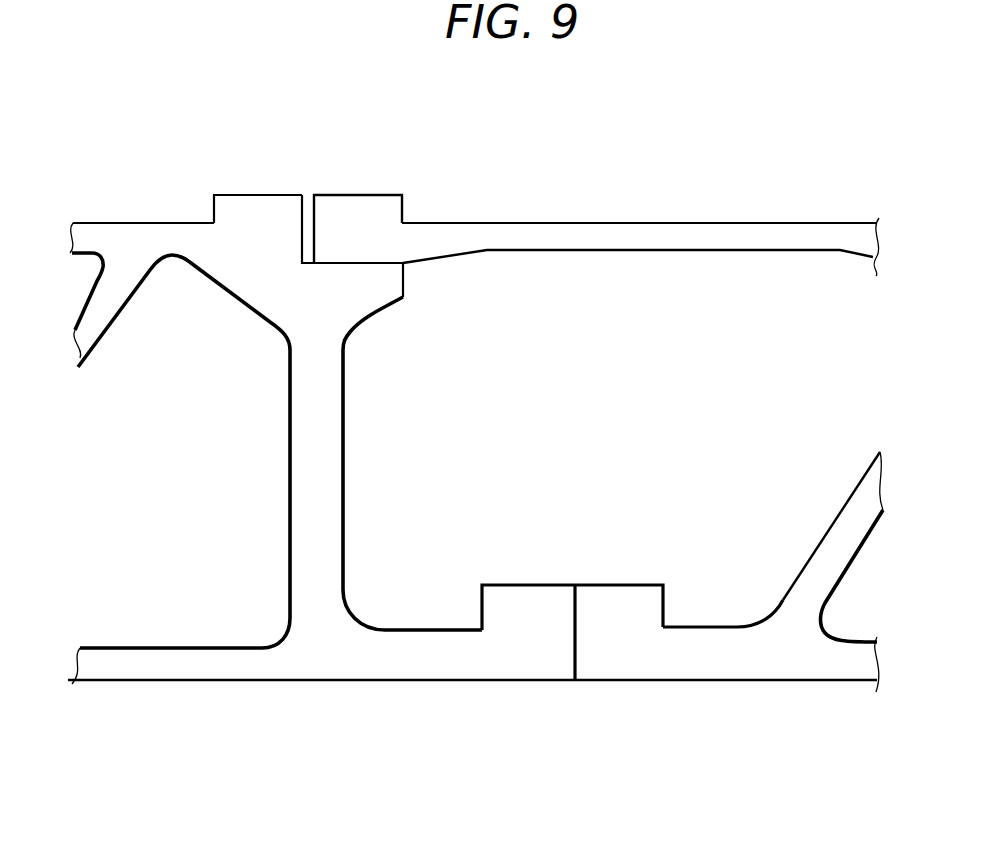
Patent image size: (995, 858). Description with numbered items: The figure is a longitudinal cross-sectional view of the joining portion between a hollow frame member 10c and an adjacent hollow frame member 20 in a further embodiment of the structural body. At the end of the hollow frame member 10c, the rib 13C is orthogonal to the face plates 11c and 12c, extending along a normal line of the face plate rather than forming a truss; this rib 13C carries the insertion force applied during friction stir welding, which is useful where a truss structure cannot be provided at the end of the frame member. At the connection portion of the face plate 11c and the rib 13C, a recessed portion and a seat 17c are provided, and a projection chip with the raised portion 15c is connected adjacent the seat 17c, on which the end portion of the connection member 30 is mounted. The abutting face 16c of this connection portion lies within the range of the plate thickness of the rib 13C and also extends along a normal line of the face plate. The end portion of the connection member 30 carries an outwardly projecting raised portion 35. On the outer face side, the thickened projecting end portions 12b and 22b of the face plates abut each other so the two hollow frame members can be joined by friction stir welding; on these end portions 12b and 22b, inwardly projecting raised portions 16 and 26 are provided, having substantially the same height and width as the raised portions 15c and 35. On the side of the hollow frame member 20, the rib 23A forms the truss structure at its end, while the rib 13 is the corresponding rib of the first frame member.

The hollow frame member 10c is at (193, 173).
The face plate 11c is at (143, 228).
The face plate 12c is at (190, 663).
The end portion of face plate 12b is at (445, 665).
The rib 13 is at (97, 340).
The rib 13C is at (344, 447).
The raised portion 15c is at (225, 207).
The abutting face 16c is at (300, 212).
The raised portion 16 is at (522, 597).
The seat 17c is at (357, 265).
The hollow frame member 20 is at (765, 716).
The end portion of face plate 22b is at (688, 665).
The rib 23A is at (810, 563).
The raised portion 26 is at (614, 595).
The connection member 30 is at (597, 228).
The raised portion 35 is at (373, 190).